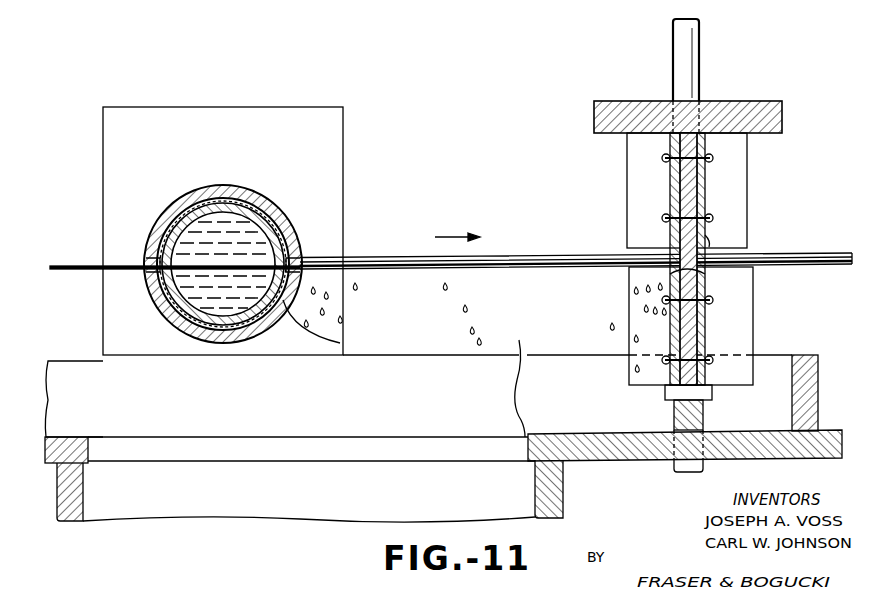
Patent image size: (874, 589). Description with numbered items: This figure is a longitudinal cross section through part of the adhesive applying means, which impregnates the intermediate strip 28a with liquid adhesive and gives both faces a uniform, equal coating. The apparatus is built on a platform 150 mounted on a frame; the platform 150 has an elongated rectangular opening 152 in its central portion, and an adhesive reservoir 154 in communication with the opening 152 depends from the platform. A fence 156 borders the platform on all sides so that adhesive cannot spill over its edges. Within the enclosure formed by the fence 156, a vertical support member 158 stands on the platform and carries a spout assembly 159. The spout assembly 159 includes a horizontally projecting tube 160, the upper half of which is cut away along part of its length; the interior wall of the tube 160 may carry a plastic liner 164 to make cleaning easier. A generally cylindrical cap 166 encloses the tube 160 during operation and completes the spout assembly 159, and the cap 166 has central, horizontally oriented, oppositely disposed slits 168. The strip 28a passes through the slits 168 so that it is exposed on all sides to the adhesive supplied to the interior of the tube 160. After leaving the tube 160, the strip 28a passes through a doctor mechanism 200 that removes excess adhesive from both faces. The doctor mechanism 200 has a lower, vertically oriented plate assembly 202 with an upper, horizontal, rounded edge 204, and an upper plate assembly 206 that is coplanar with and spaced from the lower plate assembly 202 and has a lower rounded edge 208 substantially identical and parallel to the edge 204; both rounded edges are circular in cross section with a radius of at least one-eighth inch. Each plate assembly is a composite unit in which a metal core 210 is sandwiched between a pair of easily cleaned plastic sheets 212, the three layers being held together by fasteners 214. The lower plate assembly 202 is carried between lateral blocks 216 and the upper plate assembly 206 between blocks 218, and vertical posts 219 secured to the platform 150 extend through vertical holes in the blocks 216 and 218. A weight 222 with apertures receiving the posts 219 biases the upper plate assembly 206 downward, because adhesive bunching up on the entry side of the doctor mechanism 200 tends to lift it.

The intermediate strip 28a is at (87, 263).
The platform 150 is at (815, 458).
The opening 152 is at (520, 348).
The adhesive reservoir 154 is at (566, 464).
The fence 156 is at (403, 355).
The vertical support member 158 is at (343, 198).
The spout assembly 159 is at (262, 188).
The tube 160 is at (290, 233).
The plastic liner 164 is at (343, 344).
The cap 166 is at (272, 212).
The slits 168 is at (145, 263).
The doctor mechanism 200 is at (710, 245).
The lower plate assembly 202 is at (730, 270).
The rounded edge 204 is at (704, 272).
The upper plate assembly 206 is at (707, 175).
The rounded edge 208 is at (708, 237).
The metal core 210 is at (682, 171).
The plastic sheets 212 is at (672, 182).
The fasteners 214 is at (713, 157).
The lateral blocks 216 is at (753, 312).
The blocks 218 is at (748, 211).
The vertical posts 219 is at (700, 46).
The weight 222 is at (783, 116).